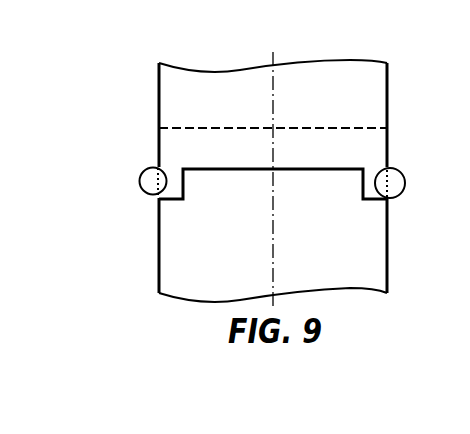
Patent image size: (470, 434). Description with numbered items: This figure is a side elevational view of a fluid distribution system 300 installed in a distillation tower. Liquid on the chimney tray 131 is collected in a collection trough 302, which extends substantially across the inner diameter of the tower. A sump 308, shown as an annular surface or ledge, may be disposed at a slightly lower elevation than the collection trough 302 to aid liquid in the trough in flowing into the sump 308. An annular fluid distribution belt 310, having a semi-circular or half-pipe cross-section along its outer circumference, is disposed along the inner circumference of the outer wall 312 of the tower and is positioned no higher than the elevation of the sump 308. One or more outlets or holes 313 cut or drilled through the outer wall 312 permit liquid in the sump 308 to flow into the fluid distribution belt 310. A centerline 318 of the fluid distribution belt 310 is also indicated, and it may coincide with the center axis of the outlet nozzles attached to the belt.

The fluid distribution system 300 is at (93, 79).
The chimney tray 131 is at (195, 128).
The centerline 318 is at (275, 63).
The holes 313 is at (164, 172).
The fluid distribution belt 310 is at (145, 186).
The collection trough 302 is at (347, 169).
The sump 308 is at (373, 195).
The outer wall 312 is at (383, 242).